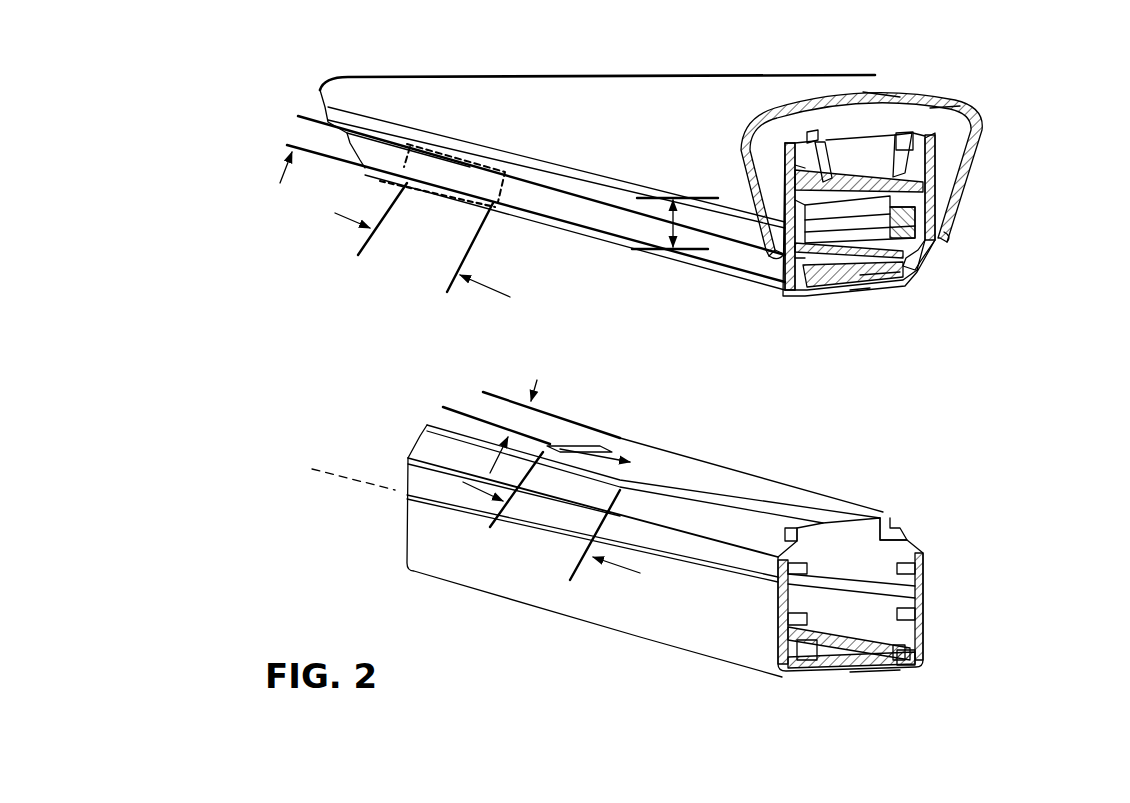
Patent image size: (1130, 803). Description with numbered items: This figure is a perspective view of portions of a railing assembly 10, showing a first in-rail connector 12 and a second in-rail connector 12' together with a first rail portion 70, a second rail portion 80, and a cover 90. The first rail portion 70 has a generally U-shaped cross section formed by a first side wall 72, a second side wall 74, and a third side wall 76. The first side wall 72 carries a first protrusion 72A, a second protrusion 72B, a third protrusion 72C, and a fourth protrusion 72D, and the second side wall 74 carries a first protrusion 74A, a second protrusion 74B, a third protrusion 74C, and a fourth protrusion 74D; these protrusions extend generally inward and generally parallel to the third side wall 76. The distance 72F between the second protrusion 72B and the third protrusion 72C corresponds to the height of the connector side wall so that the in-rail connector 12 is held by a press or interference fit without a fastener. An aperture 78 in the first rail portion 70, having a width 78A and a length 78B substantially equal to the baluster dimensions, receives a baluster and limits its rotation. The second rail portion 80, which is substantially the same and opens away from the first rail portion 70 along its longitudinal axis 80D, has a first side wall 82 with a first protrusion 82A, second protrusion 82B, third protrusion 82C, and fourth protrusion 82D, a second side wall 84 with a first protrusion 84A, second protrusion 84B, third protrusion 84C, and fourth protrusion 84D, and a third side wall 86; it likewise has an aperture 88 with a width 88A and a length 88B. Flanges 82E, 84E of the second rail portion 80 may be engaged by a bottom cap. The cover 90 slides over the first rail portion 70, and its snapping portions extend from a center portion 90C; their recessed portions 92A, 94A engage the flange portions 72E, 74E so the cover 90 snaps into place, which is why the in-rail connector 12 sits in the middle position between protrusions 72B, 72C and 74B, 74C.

The railing assembly 10 is at (1040, 170).
The first in-rail connector 12 is at (889, 309).
The second in-rail connector 12' is at (897, 713).
The first rail portion 70 is at (833, 318).
The first side wall 72 is at (573, 220).
The first protrusion 72A is at (807, 290).
The second protrusion 72B is at (802, 260).
The third protrusion 72C is at (790, 215).
The fourth protrusion 72D is at (778, 160).
The flange portion 72E is at (812, 135).
The distance 72F is at (638, 241).
The second side wall 74 is at (923, 263).
The first protrusion 74A is at (907, 278).
The second protrusion 74B is at (917, 250).
The third protrusion 74C is at (912, 190).
The fourth protrusion 74D is at (930, 140).
The flange portion 74E is at (935, 110).
The third side wall 76 is at (857, 298).
The aperture 78 is at (458, 155).
The width 78A is at (306, 108).
The length 78B is at (355, 252).
The second rail portion 80 is at (366, 442).
The longitudinal axis 80D is at (328, 478).
The first side wall 82 is at (618, 598).
The first protrusion 82A is at (787, 557).
The second protrusion 82B is at (797, 570).
The third protrusion 82C is at (788, 627).
The fourth protrusion 82D is at (797, 660).
The flange 82E is at (803, 668).
The second side wall 84 is at (960, 513).
The first protrusion 84A is at (905, 530).
The second protrusion 84B is at (913, 570).
The third protrusion 84C is at (910, 613).
The fourth protrusion 84D is at (913, 667).
The flange 84E is at (897, 665).
The third side wall 86 is at (747, 493).
The aperture 88 is at (632, 462).
The width 88A is at (531, 403).
The length 88B is at (468, 529).
The cover 90 is at (945, 86).
The center portion 90C is at (850, 72).
The recessed portion 92A is at (818, 143).
The recessed portion 94A is at (905, 128).